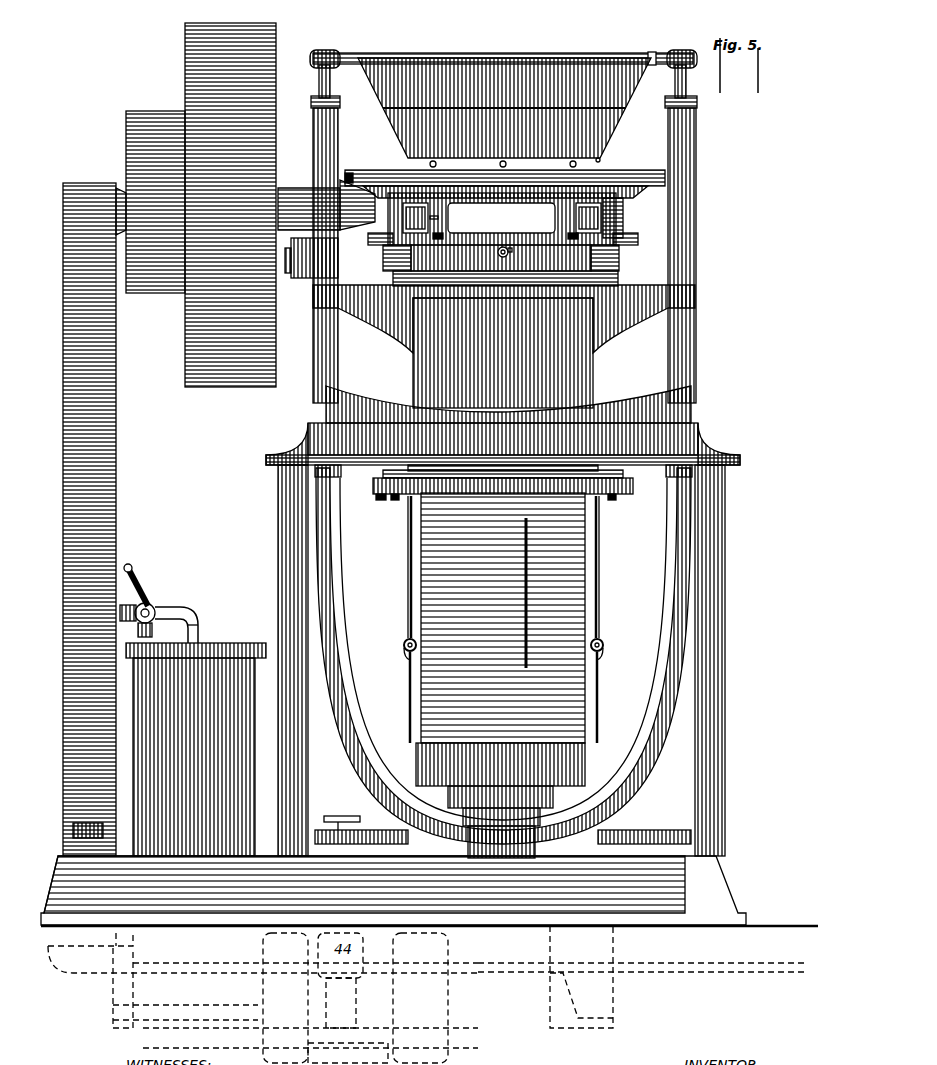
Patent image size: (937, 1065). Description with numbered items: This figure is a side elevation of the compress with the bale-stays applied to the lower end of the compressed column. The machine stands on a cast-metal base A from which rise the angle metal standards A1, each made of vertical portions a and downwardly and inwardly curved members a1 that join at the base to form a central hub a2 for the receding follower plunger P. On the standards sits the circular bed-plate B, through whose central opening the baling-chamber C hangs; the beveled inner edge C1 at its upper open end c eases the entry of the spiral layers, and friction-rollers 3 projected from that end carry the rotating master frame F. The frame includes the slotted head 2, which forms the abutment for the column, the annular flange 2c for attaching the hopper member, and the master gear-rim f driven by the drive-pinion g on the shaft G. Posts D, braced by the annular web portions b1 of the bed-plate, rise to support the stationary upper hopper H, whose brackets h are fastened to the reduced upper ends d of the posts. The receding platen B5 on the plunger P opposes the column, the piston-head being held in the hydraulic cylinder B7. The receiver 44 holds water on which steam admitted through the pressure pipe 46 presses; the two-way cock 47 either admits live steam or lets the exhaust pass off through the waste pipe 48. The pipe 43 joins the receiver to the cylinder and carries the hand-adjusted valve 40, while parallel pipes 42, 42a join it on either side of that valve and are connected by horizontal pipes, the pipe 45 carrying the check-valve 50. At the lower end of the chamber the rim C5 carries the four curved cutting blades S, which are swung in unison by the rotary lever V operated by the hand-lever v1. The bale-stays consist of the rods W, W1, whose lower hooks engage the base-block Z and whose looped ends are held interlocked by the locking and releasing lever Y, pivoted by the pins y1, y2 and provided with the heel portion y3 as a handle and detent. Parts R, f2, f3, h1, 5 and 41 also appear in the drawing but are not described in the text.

The cast-metal base A is at (429, 891).
The angle metal standards A1 is at (270, 550).
The circular bed-plate B is at (503, 444).
The receding platen B5 is at (448, 800).
The hydraulic cylinder B7 is at (643, 950).
The baling-chamber C is at (505, 265).
The beveled inner edge C1 is at (504, 346).
The rim C5 is at (450, 457).
The posts D is at (330, 150).
The master frame F is at (505, 176).
The shaft G is at (58, 192).
The stationary upper hopper H is at (504, 108).
The plunger P is at (534, 808).
The ring R is at (612, 215).
The cutting blades S is at (480, 482).
The rotary lever V is at (622, 474).
The hand-lever v1 is at (628, 492).
The stay rod W is at (402, 580).
The stay rod W1 is at (502, 730).
The locking and releasing lever Y is at (406, 604).
The pin y1 is at (396, 636).
The pin y2 is at (398, 646).
The heel portion y3 is at (520, 512).
The base-block Z is at (500, 764).
The vertical portions a is at (501, 656).
The curved members a1 is at (338, 556).
The central hub a2 is at (501, 842).
The annular web portions b1 is at (360, 392).
The upper open end c is at (502, 219).
The reduced upper ends d is at (311, 78).
The master gear-rim f is at (375, 162).
The bearing block f2 is at (505, 226).
The bearing shells f3 is at (380, 232).
The drive-pinion g is at (326, 206).
The brackets h is at (360, 56).
The bar end h1 is at (646, 57).
The slotted head 2 is at (438, 207).
The annular flange 2c is at (590, 150).
The friction-rollers 3 is at (378, 248).
The pin 5 is at (514, 253).
The hand-adjusted valve 40 is at (263, 999).
The outlet 41 is at (342, 812).
The parallel pipe 42 is at (286, 998).
The parallel pipe 42a is at (411, 998).
The pipe 43 is at (348, 1054).
The receiver 44 is at (196, 749).
The horizontal pipe 45 is at (488, 966).
The fluid pressure pipe 46 is at (180, 598).
The two-way cock 47 is at (132, 592).
The exhaust pipe 48 is at (146, 621).
The check-valve 50 is at (331, 980).